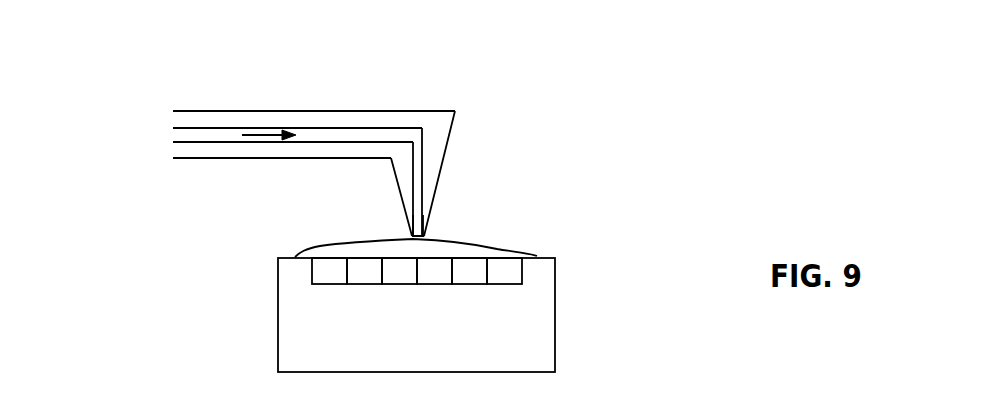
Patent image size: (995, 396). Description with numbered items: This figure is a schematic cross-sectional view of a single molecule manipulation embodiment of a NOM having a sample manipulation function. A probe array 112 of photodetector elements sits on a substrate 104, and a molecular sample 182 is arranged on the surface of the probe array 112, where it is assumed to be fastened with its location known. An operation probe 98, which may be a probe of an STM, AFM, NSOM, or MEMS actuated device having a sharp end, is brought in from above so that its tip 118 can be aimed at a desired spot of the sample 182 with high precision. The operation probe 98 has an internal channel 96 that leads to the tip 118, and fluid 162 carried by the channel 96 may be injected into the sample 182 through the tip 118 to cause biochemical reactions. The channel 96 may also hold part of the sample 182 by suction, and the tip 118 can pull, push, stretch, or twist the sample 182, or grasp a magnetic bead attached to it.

The channel 96 is at (226, 143).
The fluid 162 is at (270, 135).
The operation probe 98 is at (442, 120).
The tip 118 is at (425, 236).
The sample 182 is at (494, 253).
The substrate 104 is at (416, 315).
The probe array 112 is at (312, 275).